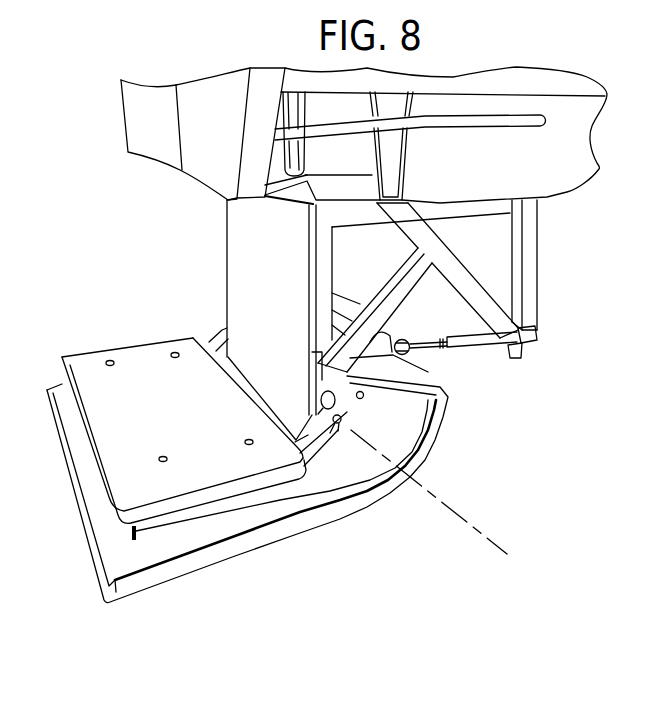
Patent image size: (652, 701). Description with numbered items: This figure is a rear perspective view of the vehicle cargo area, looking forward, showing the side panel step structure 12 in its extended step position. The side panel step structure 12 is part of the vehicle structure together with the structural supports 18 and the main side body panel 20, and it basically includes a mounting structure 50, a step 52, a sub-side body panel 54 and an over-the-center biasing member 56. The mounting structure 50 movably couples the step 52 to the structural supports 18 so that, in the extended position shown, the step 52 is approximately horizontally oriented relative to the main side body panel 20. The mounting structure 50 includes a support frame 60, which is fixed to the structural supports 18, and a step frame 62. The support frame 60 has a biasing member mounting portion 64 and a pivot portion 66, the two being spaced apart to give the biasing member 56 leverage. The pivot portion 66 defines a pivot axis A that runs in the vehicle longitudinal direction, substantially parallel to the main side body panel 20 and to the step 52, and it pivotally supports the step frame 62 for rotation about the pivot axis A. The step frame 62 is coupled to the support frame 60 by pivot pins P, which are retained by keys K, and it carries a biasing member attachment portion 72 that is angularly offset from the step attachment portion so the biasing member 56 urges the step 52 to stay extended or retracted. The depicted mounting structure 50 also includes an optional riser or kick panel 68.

The side panel step structure 12 is at (158, 279).
The structural supports 18 is at (558, 155).
The main side body panel 20 is at (210, 108).
The mounting structure 50 is at (553, 262).
The step 52 is at (143, 362).
The sub-side body panel 54 is at (229, 549).
The over-the-center biasing member 56 is at (478, 345).
The support frame 60 is at (528, 298).
The step frame 62 is at (213, 340).
The biasing member mounting portion 64 is at (530, 328).
The pivot portion 66 is at (333, 368).
The kick panel 68 is at (258, 243).
The biasing member attachment portion 72 is at (383, 358).
The keys K is at (320, 397).
The pivot pins P is at (343, 417).
The pivot axis A is at (497, 543).